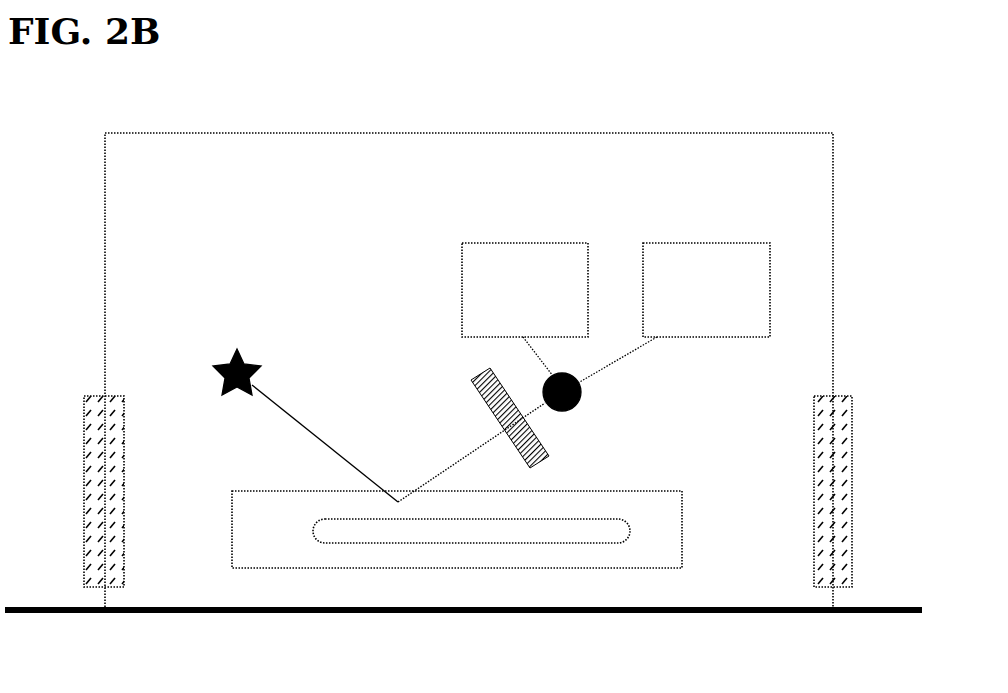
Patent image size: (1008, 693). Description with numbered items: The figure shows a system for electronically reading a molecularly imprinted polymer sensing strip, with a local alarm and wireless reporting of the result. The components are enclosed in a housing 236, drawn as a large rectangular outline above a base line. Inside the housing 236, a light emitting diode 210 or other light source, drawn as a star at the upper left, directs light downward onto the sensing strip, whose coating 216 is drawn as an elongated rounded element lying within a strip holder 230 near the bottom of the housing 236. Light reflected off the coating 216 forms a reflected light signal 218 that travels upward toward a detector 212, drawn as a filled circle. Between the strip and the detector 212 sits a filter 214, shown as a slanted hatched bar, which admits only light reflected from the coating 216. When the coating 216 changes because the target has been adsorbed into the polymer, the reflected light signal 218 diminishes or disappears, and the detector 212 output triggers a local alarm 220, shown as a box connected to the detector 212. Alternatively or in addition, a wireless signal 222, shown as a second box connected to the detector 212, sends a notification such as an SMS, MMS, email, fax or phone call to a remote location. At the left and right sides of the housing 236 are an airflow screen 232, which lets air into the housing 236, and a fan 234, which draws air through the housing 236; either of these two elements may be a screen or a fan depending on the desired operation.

The light emitting diode 210 is at (245, 359).
The detector 212 is at (585, 397).
The filter 214 is at (490, 416).
The coating 216 is at (471, 534).
The reflected light signal 218 is at (471, 452).
The local alarm 220 is at (706, 290).
The wireless signal 222 is at (525, 290).
The sample holder 230 is at (457, 529).
The airflow screen 232 is at (75, 491).
The fan 234 is at (860, 491).
The housing 236 is at (312, 130).